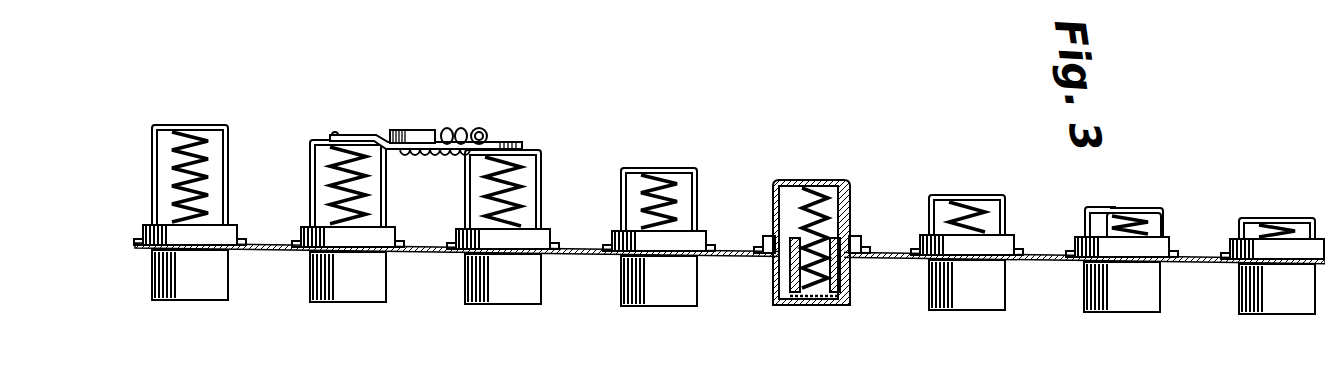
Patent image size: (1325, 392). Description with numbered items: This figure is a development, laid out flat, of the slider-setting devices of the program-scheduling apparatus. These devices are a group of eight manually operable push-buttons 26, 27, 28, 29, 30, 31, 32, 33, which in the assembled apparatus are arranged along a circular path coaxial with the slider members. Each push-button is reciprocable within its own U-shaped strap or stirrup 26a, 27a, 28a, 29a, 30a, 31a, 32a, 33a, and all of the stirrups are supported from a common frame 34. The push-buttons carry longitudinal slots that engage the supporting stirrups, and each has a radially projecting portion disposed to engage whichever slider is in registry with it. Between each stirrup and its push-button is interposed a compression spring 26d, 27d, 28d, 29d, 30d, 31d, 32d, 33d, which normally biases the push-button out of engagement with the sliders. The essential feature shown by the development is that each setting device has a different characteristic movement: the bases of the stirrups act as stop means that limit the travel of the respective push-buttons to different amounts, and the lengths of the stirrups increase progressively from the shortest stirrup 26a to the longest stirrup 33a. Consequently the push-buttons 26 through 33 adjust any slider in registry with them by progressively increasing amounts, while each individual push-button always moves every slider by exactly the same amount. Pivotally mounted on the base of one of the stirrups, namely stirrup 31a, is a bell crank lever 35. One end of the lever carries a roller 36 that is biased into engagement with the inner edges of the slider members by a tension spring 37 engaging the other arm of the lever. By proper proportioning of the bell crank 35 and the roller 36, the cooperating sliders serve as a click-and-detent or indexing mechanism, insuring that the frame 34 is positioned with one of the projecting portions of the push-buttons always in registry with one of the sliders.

The push-button 26 is at (1283, 302).
The U-shaped strap or stirrup 26a is at (1280, 220).
The compression spring 26d is at (1255, 227).
The push-button 27 is at (1133, 302).
The U-shaped strap or stirrup 27a is at (1125, 208).
The compression spring 27d is at (1162, 222).
The push-button 28 is at (970, 302).
The U-shaped strap or stirrup 28a is at (970, 197).
The compression spring 28d is at (990, 212).
The push-button 29 is at (812, 306).
The U-shaped strap or stirrup 29a is at (818, 180).
The compression spring 29d is at (832, 195).
The push-button 30 is at (660, 300).
The U-shaped strap or stirrup 30a is at (670, 168).
The compression spring 30d is at (665, 190).
The push-button 31 is at (452, 300).
The U-shaped strap or stirrup 31a is at (540, 153).
The compression spring 31d is at (510, 195).
The push-button 32 is at (345, 298).
The U-shaped strap or stirrup 32a is at (320, 140).
The compression spring 32d is at (355, 185).
The push-button 33 is at (206, 288).
The U-shaped strap or stirrup 33a is at (213, 125).
The compression spring 33d is at (200, 180).
The frame 34 is at (736, 250).
The bell crank lever 35 is at (518, 142).
The roller 36 is at (415, 130).
The tension spring 37 is at (450, 145).